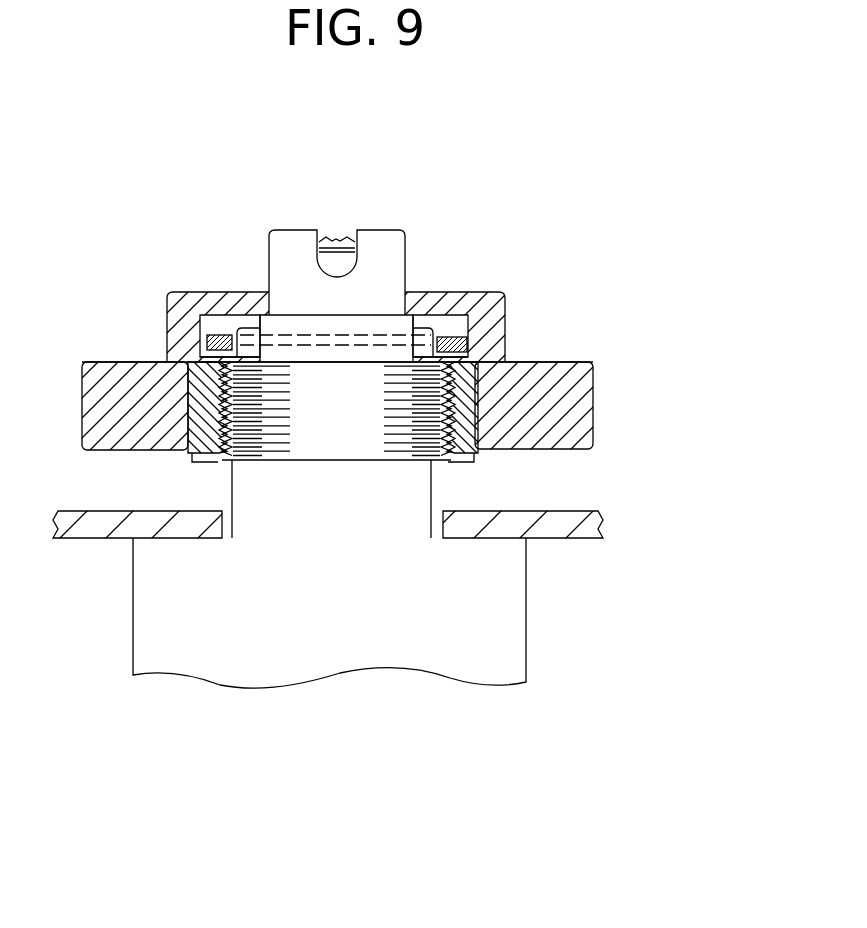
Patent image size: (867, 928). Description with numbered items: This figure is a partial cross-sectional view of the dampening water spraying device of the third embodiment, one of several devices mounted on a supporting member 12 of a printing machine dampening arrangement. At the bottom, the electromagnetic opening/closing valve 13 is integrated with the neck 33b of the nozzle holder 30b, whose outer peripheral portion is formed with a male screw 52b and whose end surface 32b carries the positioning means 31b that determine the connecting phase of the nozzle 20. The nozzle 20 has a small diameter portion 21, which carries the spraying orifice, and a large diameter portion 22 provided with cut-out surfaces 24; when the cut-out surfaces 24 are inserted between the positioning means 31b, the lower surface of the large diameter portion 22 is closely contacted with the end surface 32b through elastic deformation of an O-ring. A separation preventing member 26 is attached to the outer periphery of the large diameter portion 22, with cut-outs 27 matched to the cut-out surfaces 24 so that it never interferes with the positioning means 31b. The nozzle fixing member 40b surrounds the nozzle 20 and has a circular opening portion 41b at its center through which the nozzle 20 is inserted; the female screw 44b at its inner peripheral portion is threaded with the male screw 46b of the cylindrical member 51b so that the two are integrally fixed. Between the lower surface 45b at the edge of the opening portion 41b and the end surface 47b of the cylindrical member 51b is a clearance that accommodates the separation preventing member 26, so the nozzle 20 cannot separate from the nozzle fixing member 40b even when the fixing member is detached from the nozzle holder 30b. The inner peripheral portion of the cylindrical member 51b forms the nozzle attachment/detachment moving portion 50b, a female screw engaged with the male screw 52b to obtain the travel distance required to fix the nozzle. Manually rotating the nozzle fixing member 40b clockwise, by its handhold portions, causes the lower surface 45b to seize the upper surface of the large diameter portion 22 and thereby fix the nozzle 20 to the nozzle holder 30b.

The supporting member 12 is at (92, 538).
The electromagnetic opening/closing valve 13 is at (526, 620).
The nozzle 20 is at (408, 215).
The small diameter portion 21 is at (405, 240).
The large diameter portion 22 is at (296, 320).
The cut-out surfaces 24 is at (440, 347).
The separation preventing member 26 is at (468, 328).
The cut-outs 27 is at (478, 355).
The nozzle holder 30b is at (345, 440).
The positioning means 31b is at (213, 332).
The end surface 32b is at (380, 360).
The neck 33b is at (282, 515).
The nozzle fixing member 40b is at (178, 336).
The opening portion 41b is at (266, 292).
The female screw 44b is at (452, 460).
The lower surface 45b is at (216, 324).
The male screw 46b is at (485, 404).
The end surface 47b is at (200, 347).
The nozzle attachment/detachment moving portion 50b is at (336, 410).
The cylindrical member 51b is at (480, 372).
The male screw 52b is at (221, 461).